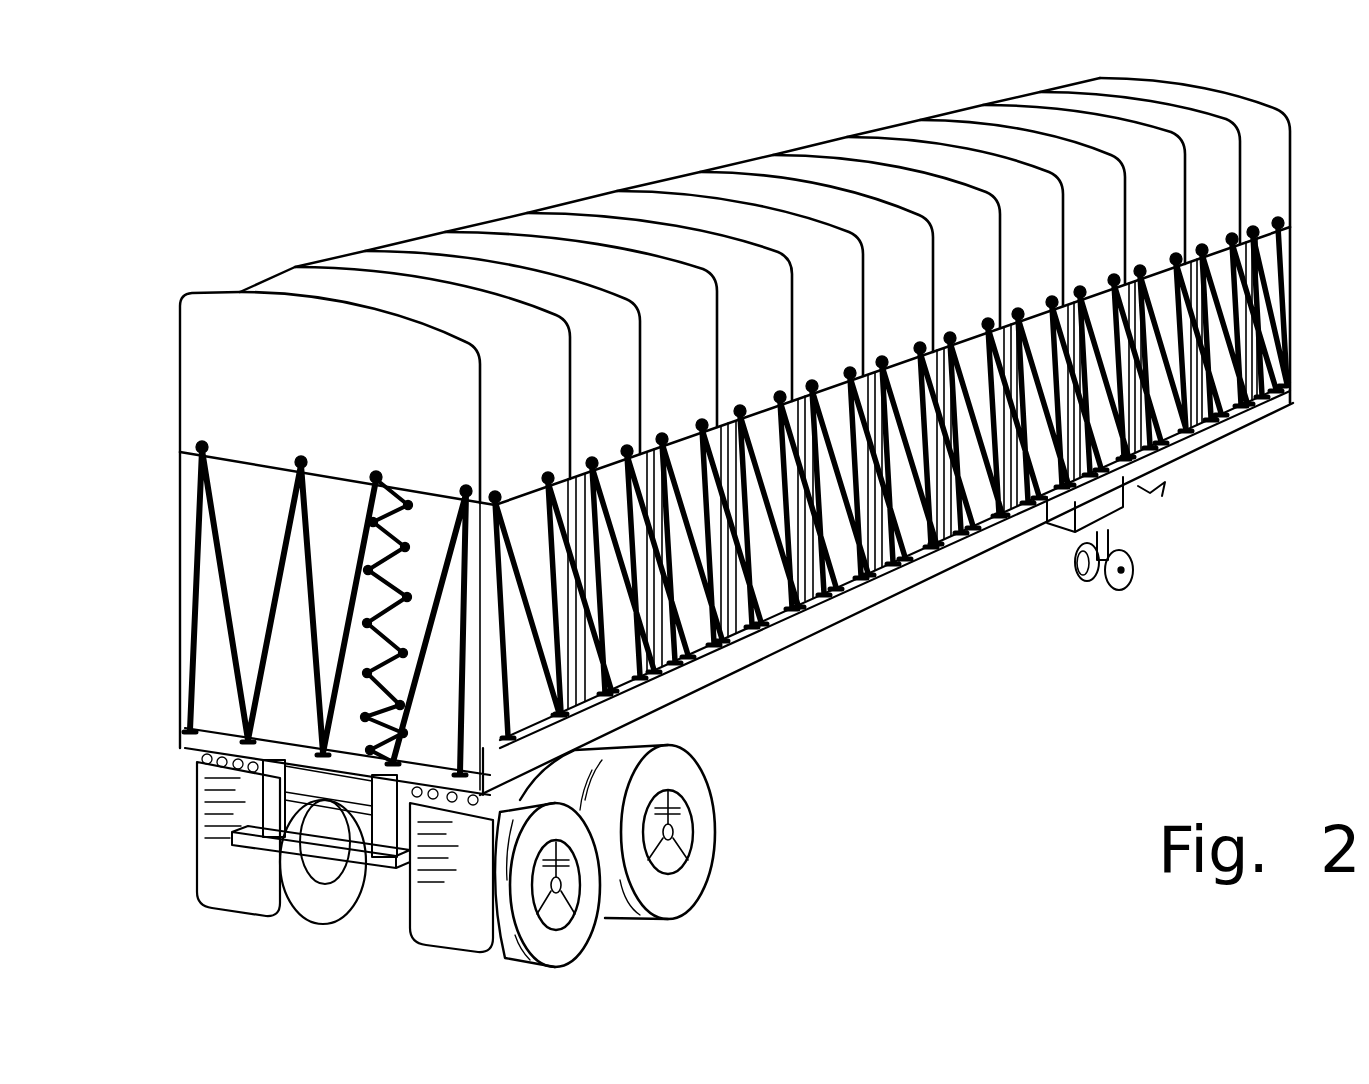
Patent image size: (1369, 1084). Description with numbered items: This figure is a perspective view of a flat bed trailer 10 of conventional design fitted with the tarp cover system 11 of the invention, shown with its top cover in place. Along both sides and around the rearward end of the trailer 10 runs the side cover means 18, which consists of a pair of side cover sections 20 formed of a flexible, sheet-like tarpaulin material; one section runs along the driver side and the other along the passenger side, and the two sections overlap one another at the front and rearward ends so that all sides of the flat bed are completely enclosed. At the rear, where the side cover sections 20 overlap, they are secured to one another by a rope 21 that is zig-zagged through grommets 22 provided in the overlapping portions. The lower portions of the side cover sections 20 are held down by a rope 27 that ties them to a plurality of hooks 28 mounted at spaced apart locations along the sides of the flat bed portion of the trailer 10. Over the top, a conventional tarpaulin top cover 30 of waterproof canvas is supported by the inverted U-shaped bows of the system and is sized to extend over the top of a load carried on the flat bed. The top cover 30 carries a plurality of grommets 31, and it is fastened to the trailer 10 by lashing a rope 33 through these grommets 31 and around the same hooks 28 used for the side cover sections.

The flat bed trailer 10 is at (714, 689).
The tarp cover system 11 is at (628, 160).
The side cover means 18 is at (128, 471).
The side cover sections 20 is at (207, 627).
The rope 21 is at (380, 537).
The grommets 22 is at (368, 582).
The rope 27 is at (823, 635).
The hooks 28 is at (921, 592).
The top cover 30 is at (600, 232).
The grommets 31 is at (661, 432).
The rope 33 is at (560, 537).